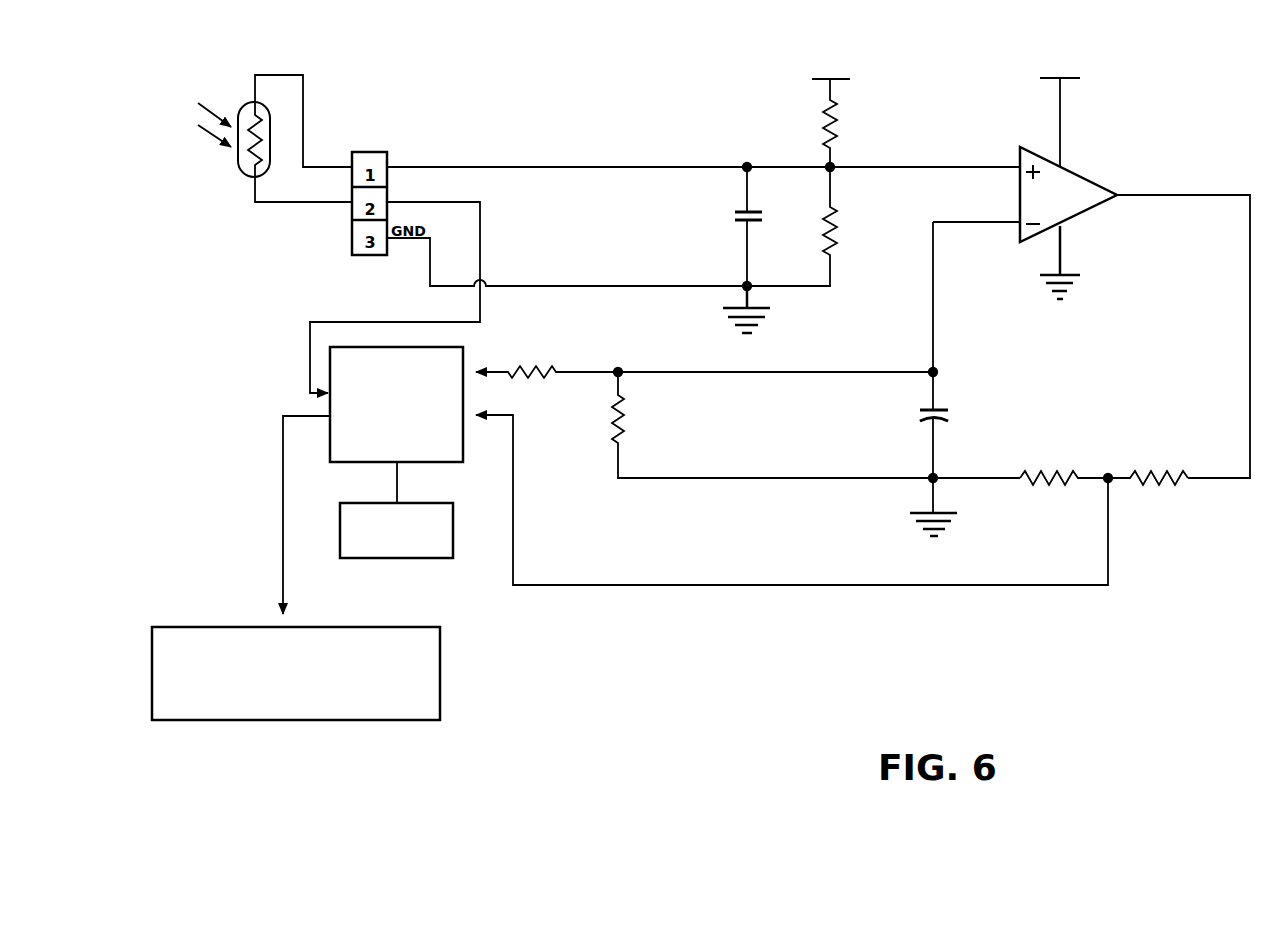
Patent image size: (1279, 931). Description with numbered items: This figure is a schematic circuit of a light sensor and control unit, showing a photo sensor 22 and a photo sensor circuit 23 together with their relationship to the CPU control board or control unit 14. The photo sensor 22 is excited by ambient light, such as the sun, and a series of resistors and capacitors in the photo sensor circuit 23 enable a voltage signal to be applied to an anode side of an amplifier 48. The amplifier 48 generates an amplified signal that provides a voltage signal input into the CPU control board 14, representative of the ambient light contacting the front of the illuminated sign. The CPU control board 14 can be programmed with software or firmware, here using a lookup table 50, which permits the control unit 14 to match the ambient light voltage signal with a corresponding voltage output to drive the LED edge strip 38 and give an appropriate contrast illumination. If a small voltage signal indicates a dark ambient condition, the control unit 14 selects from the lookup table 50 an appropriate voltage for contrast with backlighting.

The photo sensor 22 is at (237, 167).
The photo sensor circuit 23 is at (708, 53).
The amplifier 48 is at (1083, 177).
The CPU control board 14 is at (463, 448).
The lookup table 50 is at (453, 543).
The LED edge strip 38 is at (440, 657).